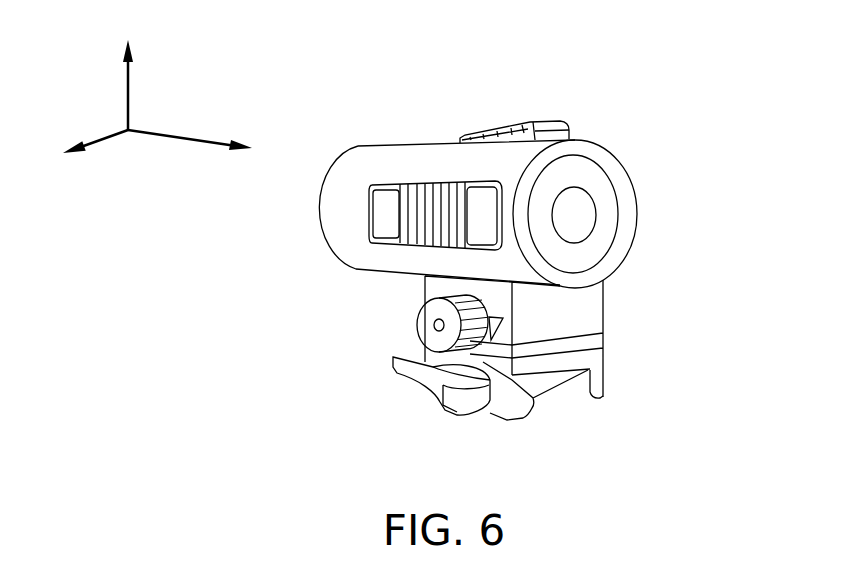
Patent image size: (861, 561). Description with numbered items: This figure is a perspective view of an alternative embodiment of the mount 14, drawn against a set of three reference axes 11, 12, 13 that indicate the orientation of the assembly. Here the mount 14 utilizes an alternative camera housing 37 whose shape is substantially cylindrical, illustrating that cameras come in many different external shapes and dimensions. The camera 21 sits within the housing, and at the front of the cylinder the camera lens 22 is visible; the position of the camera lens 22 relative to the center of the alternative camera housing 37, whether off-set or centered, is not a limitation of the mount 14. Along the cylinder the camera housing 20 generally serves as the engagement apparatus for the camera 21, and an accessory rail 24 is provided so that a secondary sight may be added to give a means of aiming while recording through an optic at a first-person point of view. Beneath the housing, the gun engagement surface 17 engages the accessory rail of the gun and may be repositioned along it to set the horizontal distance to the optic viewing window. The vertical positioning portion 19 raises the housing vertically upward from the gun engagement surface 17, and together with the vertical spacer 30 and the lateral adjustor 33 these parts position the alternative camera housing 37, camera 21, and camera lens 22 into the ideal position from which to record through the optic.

The first axis 11 is at (198, 146).
The second axis 12 is at (126, 71).
The third axis 13 is at (80, 149).
The mount 14 is at (428, 286).
The gun engagement surface 17 is at (605, 378).
The vertical positioning portion 19 is at (605, 357).
The camera housing 20 is at (500, 268).
The camera 21 is at (605, 197).
The camera lens 22 is at (577, 212).
The accessory rail 24 is at (390, 185).
The vertical spacer 30 is at (605, 340).
The lateral adjustor 33 is at (435, 327).
The alternative camera housing 37 is at (342, 217).